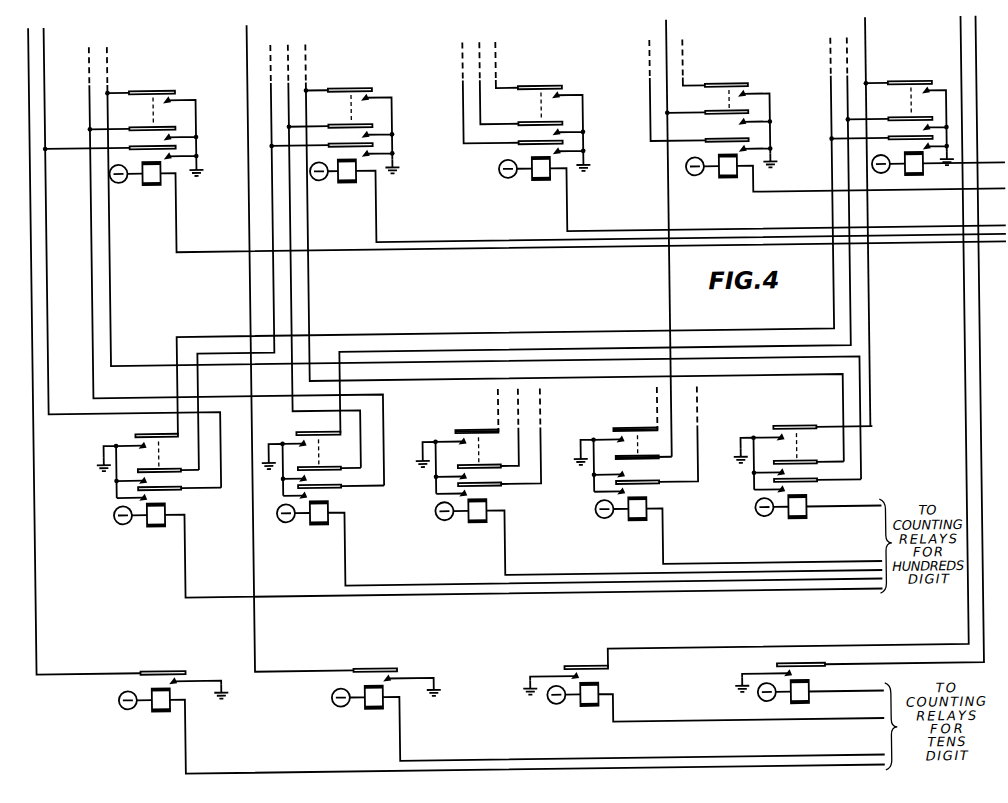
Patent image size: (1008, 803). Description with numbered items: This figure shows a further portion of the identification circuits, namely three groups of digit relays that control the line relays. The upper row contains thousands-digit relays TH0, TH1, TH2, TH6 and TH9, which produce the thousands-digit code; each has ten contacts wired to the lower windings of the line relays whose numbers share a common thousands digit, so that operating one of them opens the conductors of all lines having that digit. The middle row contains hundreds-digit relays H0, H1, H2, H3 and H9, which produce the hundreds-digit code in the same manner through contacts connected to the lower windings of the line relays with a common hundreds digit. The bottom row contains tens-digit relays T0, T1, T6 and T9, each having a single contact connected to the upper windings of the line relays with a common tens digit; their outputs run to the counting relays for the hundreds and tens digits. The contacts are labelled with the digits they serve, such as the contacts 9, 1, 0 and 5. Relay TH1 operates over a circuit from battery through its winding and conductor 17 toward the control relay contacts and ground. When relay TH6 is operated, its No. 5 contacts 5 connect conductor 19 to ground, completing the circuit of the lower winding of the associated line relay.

The conductor 17 is at (440, 243).
The conductor 19 is at (665, 30).
The contact 9 of digit relays 9 is at (533, 254).
The contact 1 of digit relays 1 is at (533, 289).
The contact 0 of digit relays 0 is at (534, 308).
The No. 5 contacts 5 is at (682, 280).
The thousands-digit relay TH0 is at (158, 184).
The thousands-digit relay TH1 is at (637, 162).
The thousands-digit relay TH2 is at (545, 184).
The thousands-digit relay TH6 is at (731, 184).
The thousands-digit relay TH9 is at (911, 184).
The hundreds-digit relay H0 is at (160, 526).
The hundreds-digit relay H1 is at (320, 526).
The hundreds-digit relay H2 is at (482, 526).
The hundreds-digit relay H3 is at (642, 526).
The hundreds-digit relay H9 is at (802, 526).
The tens-digit relay T0 is at (160, 706).
The tens-digit relay T1 is at (370, 706).
The tens-digit relay T6 is at (586, 706).
The tens-digit relay T9 is at (798, 706).